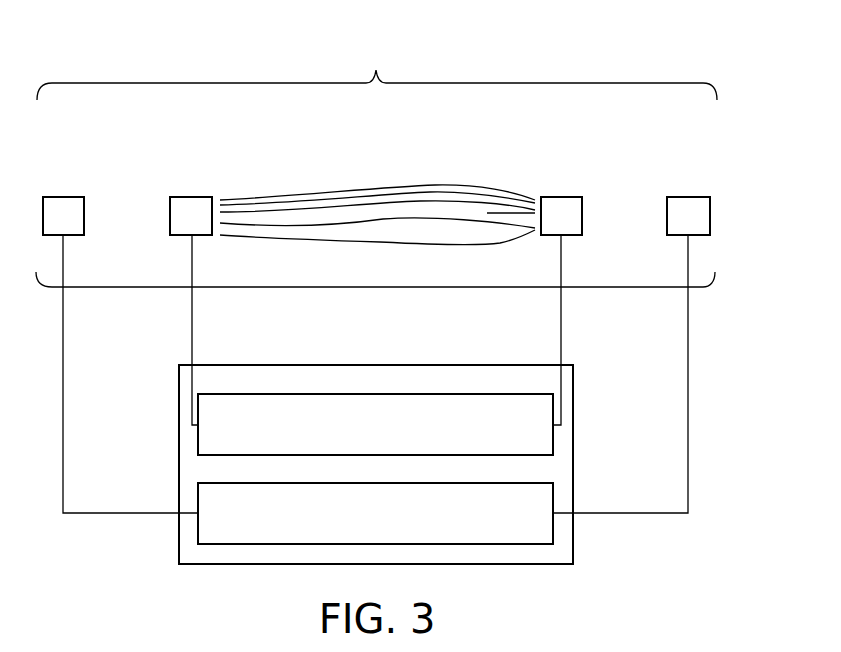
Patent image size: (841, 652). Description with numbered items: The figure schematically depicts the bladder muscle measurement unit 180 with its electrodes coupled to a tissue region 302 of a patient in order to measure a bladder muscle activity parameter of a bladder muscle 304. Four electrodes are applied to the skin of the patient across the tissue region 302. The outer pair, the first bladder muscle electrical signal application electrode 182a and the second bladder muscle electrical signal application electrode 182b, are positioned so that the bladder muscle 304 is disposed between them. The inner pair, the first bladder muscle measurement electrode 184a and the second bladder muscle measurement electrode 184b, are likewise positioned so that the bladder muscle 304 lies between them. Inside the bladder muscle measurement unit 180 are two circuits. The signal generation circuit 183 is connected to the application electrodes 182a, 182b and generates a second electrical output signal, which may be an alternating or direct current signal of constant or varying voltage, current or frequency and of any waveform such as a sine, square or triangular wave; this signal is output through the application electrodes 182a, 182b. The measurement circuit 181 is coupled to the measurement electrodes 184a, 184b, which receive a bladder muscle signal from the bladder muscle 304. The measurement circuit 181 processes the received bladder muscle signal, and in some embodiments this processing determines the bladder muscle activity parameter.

The tissue region 302 is at (376, 165).
The bladder muscle 304 is at (466, 183).
The first bladder muscle electrical signal application electrode 182a is at (63, 197).
The second bladder muscle electrical signal application electrode 182b is at (688, 197).
The first bladder muscle measurement electrode 184a is at (191, 197).
The second bladder muscle measurement electrode 184b is at (561, 197).
The bladder muscle measurement unit 180 is at (256, 365).
The measurement circuit 181 is at (380, 383).
The signal generation circuit 183 is at (553, 527).